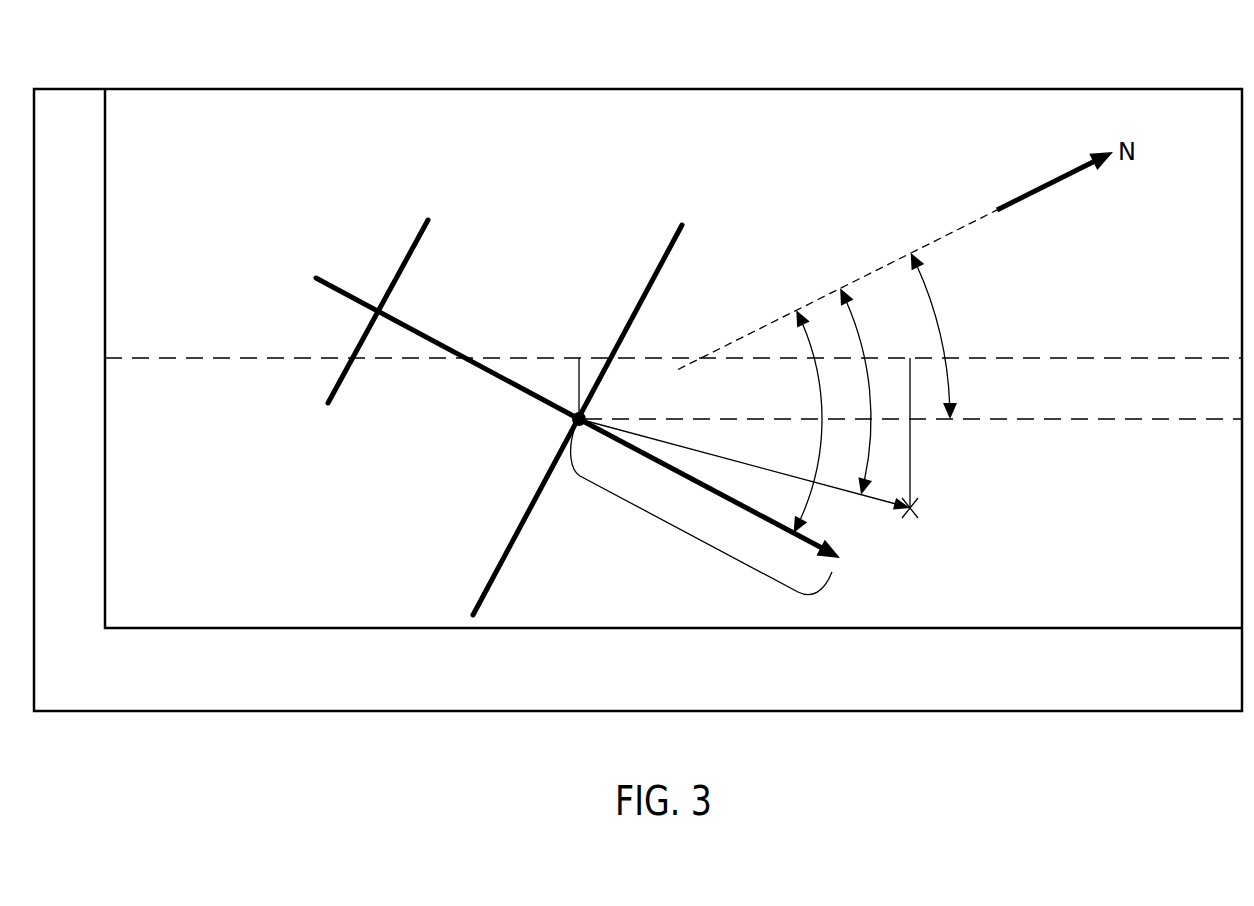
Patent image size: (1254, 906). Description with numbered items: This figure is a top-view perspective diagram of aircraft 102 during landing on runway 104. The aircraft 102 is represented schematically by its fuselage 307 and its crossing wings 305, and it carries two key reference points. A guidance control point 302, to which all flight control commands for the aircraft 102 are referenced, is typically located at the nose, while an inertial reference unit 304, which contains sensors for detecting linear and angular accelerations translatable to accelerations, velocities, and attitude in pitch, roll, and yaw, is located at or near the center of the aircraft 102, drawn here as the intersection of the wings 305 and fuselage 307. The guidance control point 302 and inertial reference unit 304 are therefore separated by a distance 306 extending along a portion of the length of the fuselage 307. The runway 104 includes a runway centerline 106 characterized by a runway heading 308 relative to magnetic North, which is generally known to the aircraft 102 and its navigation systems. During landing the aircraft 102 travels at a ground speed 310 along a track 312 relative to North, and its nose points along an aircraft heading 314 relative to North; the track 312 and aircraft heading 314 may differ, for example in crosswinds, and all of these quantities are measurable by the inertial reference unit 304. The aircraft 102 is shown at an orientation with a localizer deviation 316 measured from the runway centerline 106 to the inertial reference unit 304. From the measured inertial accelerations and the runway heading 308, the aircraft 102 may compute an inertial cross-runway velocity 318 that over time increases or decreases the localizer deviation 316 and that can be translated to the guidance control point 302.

The aircraft 102 is at (446, 412).
The runway 104 is at (209, 124).
The runway centerline 106 is at (149, 348).
The guidance control point 302 is at (838, 570).
The inertial reference unit 304 is at (573, 424).
The wings 305 is at (647, 266).
The distance 306 is at (686, 536).
The fuselage 307 is at (427, 318).
The runway heading 308 is at (922, 282).
The ground speed 310 is at (910, 515).
The track 312 is at (846, 313).
The aircraft heading 314 is at (800, 336).
The localizer deviation 316 is at (577, 396).
The inertial cross-runway velocity 318 is at (912, 452).